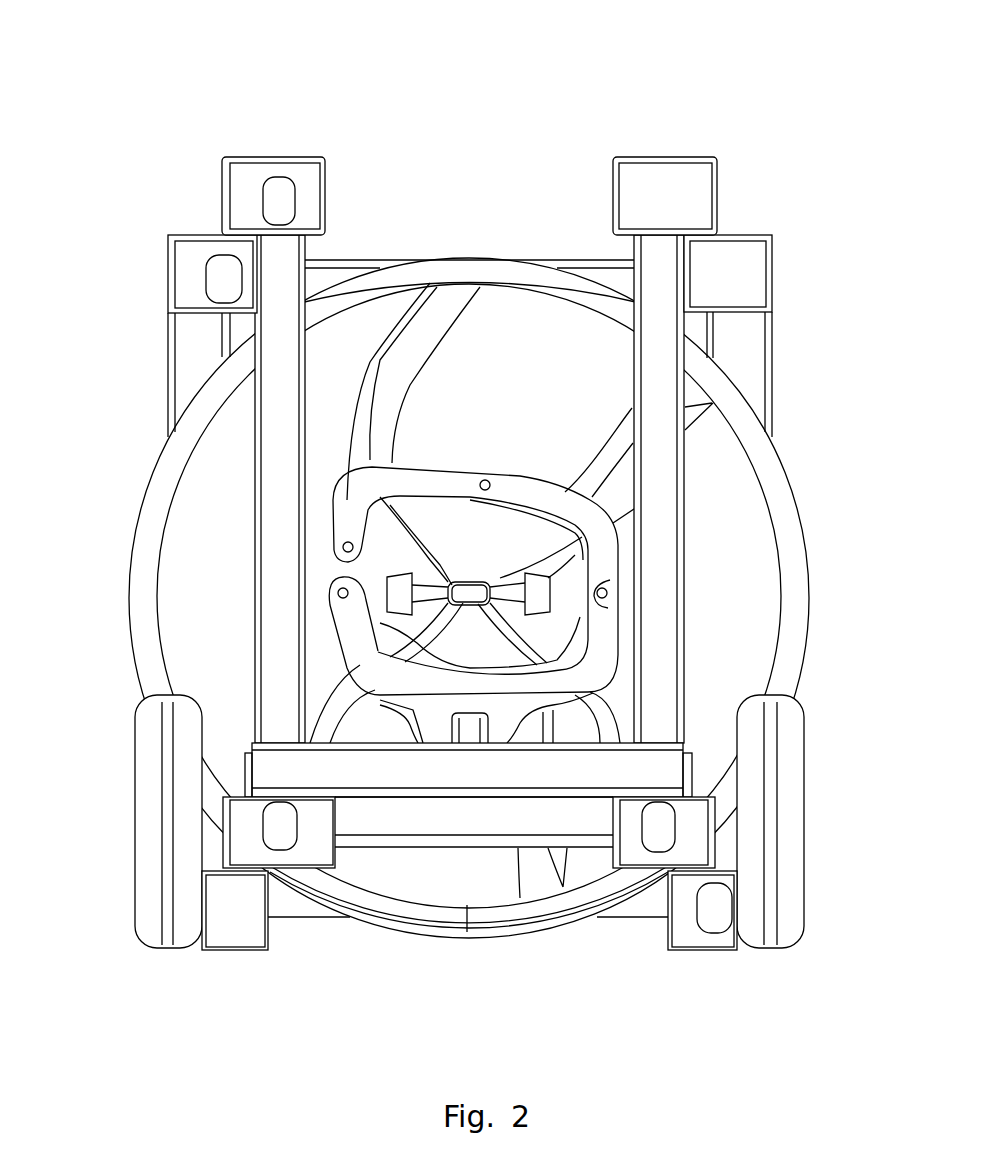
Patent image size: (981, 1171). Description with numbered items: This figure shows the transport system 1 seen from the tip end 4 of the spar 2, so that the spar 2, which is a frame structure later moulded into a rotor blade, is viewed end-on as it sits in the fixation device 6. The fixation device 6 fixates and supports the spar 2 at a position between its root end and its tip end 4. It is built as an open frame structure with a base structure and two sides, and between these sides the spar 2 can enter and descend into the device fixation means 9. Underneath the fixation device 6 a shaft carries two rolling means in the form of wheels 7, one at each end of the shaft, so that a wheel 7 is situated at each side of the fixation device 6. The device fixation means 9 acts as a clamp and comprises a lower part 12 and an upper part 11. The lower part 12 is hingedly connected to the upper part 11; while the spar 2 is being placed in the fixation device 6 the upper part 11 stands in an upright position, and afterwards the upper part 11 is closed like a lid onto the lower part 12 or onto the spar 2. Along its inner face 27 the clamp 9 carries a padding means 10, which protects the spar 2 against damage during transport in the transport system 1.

The transport system 1 is at (152, 110).
The spar 2 is at (453, 290).
The tip end 4 is at (378, 650).
The fixation device 6 is at (655, 175).
The wheels 7 is at (757, 252).
The device fixation means 9 is at (345, 507).
The padding means 10 is at (450, 580).
The upper part 11 is at (528, 497).
The lower part 12 is at (563, 688).
The inner face 27 is at (563, 513).